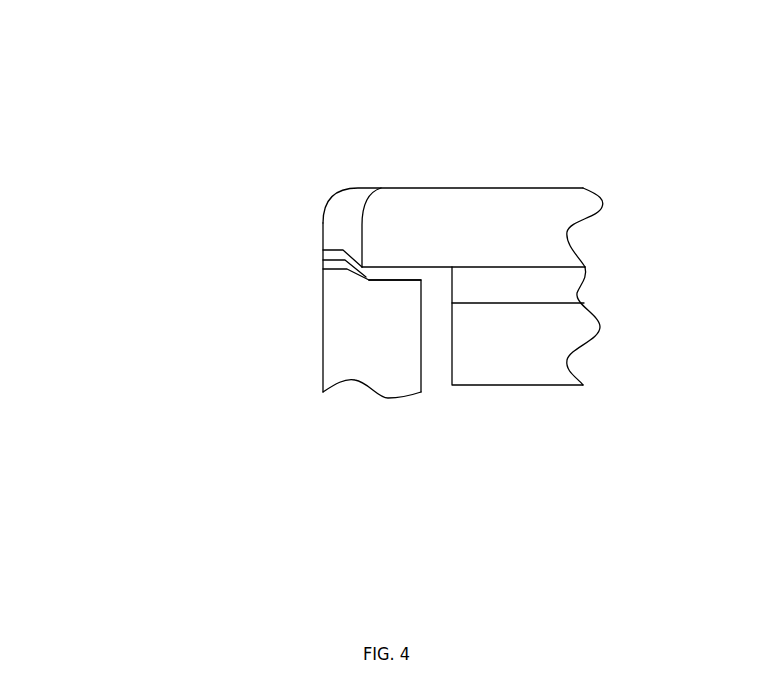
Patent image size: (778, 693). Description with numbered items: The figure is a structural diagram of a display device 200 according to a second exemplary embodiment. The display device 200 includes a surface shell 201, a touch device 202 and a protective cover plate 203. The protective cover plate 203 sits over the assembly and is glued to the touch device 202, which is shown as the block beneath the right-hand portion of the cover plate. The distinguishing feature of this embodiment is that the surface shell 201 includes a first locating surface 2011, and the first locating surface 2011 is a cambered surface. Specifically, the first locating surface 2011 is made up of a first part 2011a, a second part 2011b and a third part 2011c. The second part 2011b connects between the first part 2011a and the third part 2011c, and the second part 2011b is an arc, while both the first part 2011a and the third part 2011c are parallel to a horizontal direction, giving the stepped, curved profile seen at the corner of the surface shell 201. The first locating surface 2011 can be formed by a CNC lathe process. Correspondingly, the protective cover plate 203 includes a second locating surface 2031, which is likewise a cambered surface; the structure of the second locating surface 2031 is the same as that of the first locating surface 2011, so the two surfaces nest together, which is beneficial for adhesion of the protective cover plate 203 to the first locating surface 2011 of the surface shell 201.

The display device 200 is at (510, 117).
The surface shell 201 is at (357, 363).
The first locating surface 2011 is at (130, 245).
The first part 2011a is at (323, 260).
The second part 2011b is at (323, 269).
The third part 2011c is at (393, 281).
The touch device 202 is at (523, 360).
The protective cover plate 203 is at (527, 233).
The second locating surface 2031 is at (381, 188).